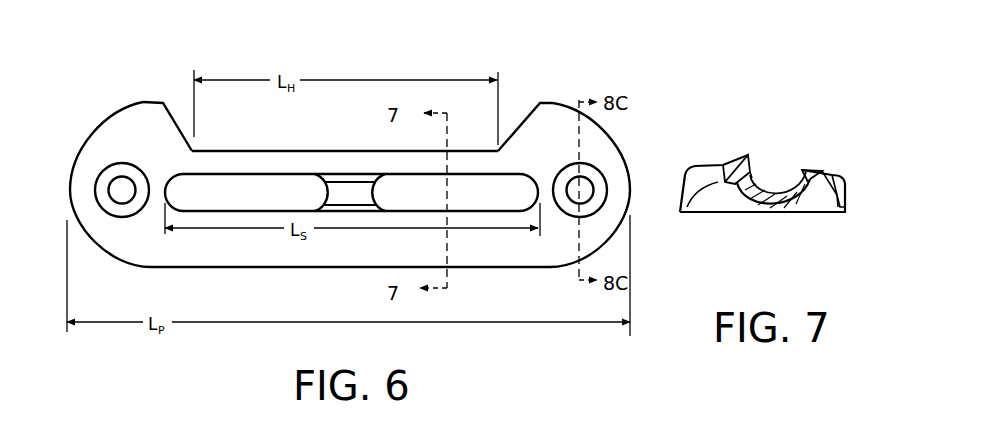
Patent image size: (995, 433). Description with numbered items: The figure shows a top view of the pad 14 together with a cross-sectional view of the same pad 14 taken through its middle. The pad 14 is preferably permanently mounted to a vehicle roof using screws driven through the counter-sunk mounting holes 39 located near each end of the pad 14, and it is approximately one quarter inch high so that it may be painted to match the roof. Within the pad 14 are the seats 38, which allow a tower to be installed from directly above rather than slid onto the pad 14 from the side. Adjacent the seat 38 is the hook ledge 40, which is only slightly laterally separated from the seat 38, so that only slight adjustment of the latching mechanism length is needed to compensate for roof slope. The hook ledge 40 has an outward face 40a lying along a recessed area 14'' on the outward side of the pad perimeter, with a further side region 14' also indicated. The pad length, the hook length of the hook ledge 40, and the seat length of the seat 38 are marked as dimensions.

In FIG. 6, the pad 14 is at (335, 135).
In FIG. 7, the pad 14 is at (744, 121).
In FIG. 6, the first side of plate 14' is at (345, 127).
In FIG. 7, the first side of plate 14' is at (825, 153).
In FIG. 6, the recessed area 14'' is at (350, 188).
In FIG. 7, the recessed area 14'' is at (697, 146).
In FIG. 6, the seat 38 is at (195, 193).
In FIG. 7, the seat 38 is at (771, 188).
In FIG. 6, the counter-sunk mounting holes 39 is at (122, 192).
In FIG. 6, the hook ledge 40 is at (337, 151).
In FIG. 7, the hook ledge 40 is at (743, 190).
In FIG. 7, the outward face 40a is at (712, 184).